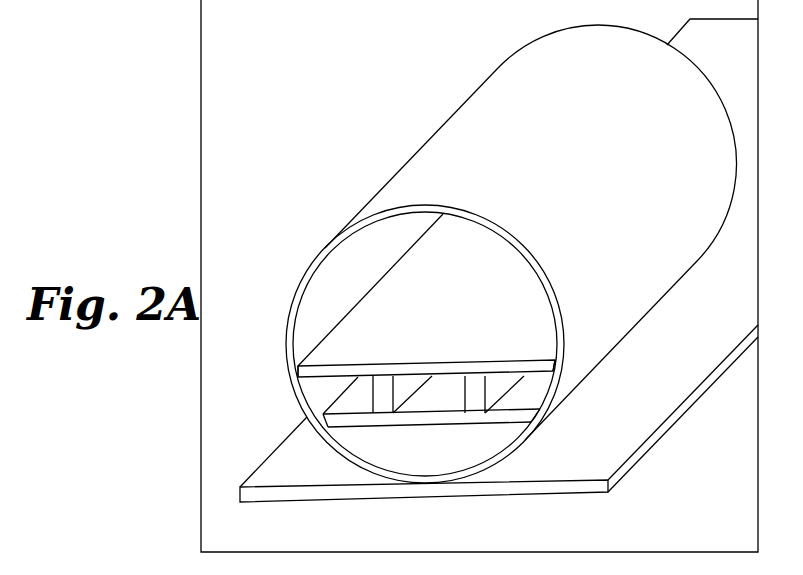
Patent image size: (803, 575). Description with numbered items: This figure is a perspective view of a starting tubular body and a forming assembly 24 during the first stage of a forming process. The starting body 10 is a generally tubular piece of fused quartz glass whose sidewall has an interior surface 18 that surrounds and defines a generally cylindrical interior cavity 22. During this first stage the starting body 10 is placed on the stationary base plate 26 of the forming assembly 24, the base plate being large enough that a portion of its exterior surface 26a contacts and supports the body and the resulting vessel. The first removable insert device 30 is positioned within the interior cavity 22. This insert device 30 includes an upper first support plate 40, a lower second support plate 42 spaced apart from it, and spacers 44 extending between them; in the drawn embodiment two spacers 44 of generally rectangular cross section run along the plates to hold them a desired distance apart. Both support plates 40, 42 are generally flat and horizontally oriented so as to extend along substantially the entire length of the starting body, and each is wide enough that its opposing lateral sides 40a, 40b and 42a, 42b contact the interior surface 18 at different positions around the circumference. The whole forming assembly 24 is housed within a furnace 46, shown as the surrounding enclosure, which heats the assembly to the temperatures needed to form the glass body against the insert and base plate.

The starting body 10 is at (437, 150).
The interior surface 18 is at (320, 263).
The interior cavity 22 is at (298, 300).
The forming assembly 24 is at (275, 52).
The base plate 26 is at (638, 452).
The exterior surface 26a is at (652, 407).
The first removable insert device 30 is at (307, 365).
The first support plate 40 is at (523, 363).
The lateral side of first support plate 40a is at (302, 372).
The lateral side of first support plate 40b is at (553, 367).
The second support plate 42 is at (513, 418).
The lateral side of second support plate 42a is at (323, 416).
The lateral side of second support plate 42b is at (528, 412).
The spacers 44 is at (472, 400).
The furnace 46 is at (200, 68).